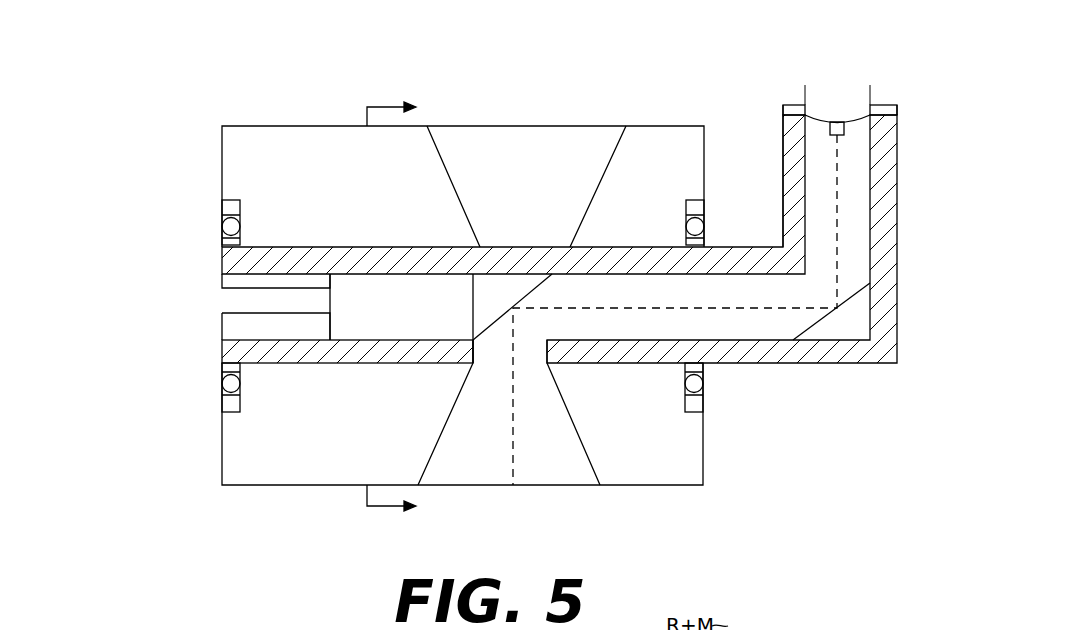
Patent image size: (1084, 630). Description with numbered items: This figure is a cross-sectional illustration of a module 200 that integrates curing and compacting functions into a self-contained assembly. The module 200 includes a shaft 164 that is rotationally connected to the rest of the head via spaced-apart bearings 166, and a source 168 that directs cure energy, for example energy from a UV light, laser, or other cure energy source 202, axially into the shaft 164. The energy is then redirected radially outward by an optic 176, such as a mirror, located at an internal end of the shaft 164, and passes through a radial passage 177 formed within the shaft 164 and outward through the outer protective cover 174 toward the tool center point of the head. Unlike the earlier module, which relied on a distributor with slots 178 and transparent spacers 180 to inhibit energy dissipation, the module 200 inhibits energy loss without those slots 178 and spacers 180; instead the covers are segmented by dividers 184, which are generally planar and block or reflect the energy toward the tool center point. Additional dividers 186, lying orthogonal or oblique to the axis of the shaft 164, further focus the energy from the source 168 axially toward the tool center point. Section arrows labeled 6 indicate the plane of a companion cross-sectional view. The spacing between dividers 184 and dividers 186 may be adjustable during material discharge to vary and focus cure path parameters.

The module 200 is at (502, 292).
The section view direction arrows 6 is at (385, 105).
The outer protective cover 174 is at (465, 126).
The dividers 184 is at (462, 424).
The shaft 164 is at (401, 318).
The bearings 166 is at (221, 222).
The source 168 is at (870, 206).
The optic 176 is at (520, 290).
The radial passage 177 is at (488, 358).
The circumferential slots 178 is at (513, 485).
The transparent spacer 180 is at (863, 310).
The dividers 186 is at (470, 225).
The cure energy source 202 is at (852, 87).